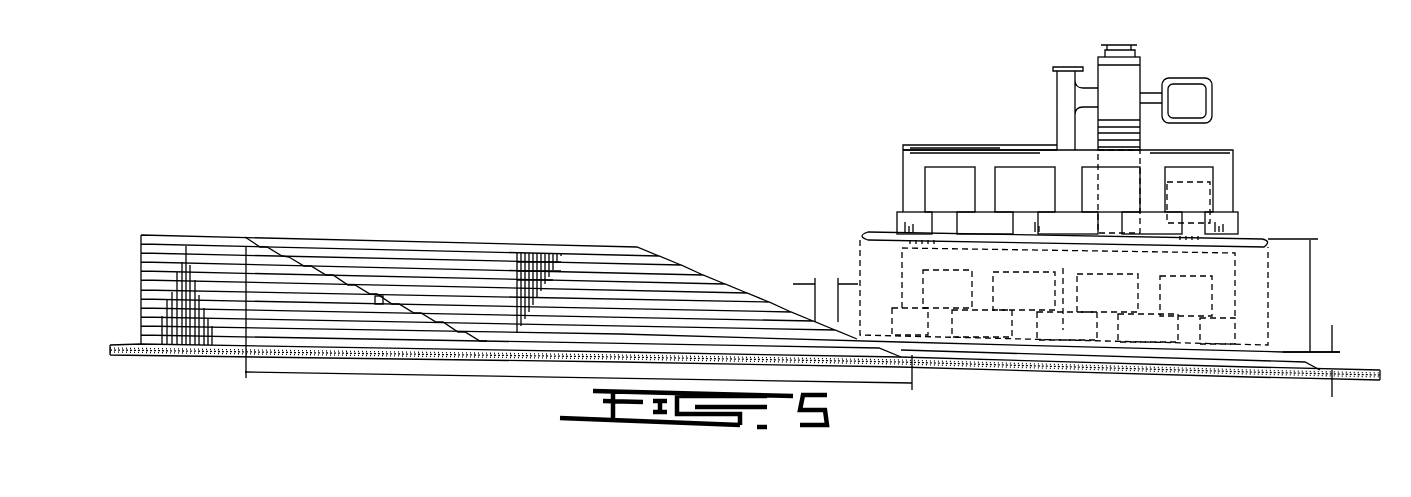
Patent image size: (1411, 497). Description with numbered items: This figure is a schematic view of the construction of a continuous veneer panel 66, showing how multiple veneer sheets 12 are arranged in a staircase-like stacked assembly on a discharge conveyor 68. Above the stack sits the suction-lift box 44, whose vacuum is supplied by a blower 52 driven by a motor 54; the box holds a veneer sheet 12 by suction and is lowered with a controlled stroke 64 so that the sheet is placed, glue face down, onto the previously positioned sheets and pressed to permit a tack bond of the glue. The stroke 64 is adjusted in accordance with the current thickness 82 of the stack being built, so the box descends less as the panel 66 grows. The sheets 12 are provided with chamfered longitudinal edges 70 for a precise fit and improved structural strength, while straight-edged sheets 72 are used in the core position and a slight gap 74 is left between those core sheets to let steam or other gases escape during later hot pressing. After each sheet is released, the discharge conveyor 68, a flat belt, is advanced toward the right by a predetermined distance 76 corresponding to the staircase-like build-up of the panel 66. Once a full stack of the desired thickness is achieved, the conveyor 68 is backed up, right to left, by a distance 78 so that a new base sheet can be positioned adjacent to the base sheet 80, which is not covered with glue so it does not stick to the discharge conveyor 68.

The veneer sheet 12 is at (1250, 238).
The suction-lift box 44 is at (1242, 183).
The blower 52 is at (1125, 71).
The motor 54 is at (1198, 88).
The stroke 64 is at (1312, 296).
The veneer panel 66 is at (497, 262).
The discharge conveyor 68 is at (1372, 378).
The chamfered longitudinal edges 70 is at (860, 236).
The straight-edged sheets 72 is at (381, 298).
The gap 74 is at (381, 304).
The predetermined distance 76 is at (828, 283).
The distance 78 is at (507, 378).
The base sheet 80 is at (1240, 364).
The current thickness 82 is at (1335, 362).